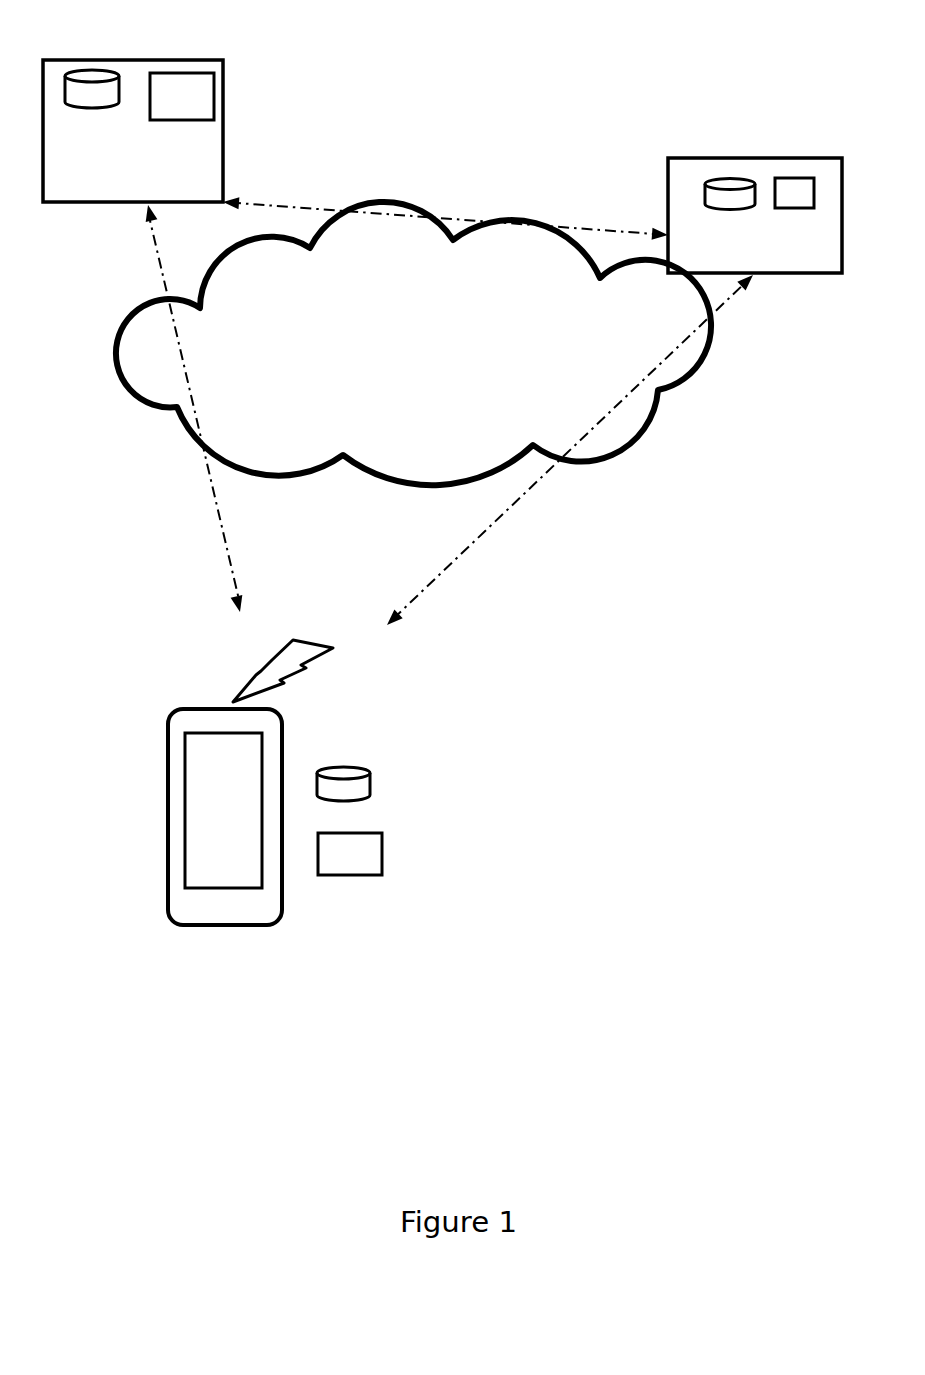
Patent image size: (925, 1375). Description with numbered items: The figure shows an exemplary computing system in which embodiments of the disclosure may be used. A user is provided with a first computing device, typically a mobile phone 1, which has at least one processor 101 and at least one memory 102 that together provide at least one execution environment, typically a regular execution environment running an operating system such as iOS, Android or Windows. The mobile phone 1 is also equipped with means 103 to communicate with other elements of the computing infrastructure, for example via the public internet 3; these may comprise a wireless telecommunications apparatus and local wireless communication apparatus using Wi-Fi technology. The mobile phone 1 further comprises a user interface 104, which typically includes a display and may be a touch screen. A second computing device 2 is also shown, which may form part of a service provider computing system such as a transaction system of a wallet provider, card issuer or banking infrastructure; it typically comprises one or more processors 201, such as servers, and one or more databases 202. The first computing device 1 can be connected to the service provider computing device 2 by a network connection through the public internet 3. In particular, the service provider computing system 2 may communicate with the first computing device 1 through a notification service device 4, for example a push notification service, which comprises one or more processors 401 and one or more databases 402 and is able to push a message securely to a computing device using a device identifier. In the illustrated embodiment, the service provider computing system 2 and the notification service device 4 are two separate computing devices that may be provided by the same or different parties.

The mobile phone 1 is at (190, 709).
The processor 101 is at (382, 853).
The memory 102 is at (370, 787).
The means to communicate 103 is at (312, 669).
The user interface 104 is at (185, 816).
The second computing device 2 is at (143, 60).
The processors 201 is at (168, 121).
The databases 202 is at (95, 109).
The public internet 3 is at (427, 487).
The notification service device 4 is at (773, 157).
The processors 401 is at (797, 209).
The databases 402 is at (732, 207).